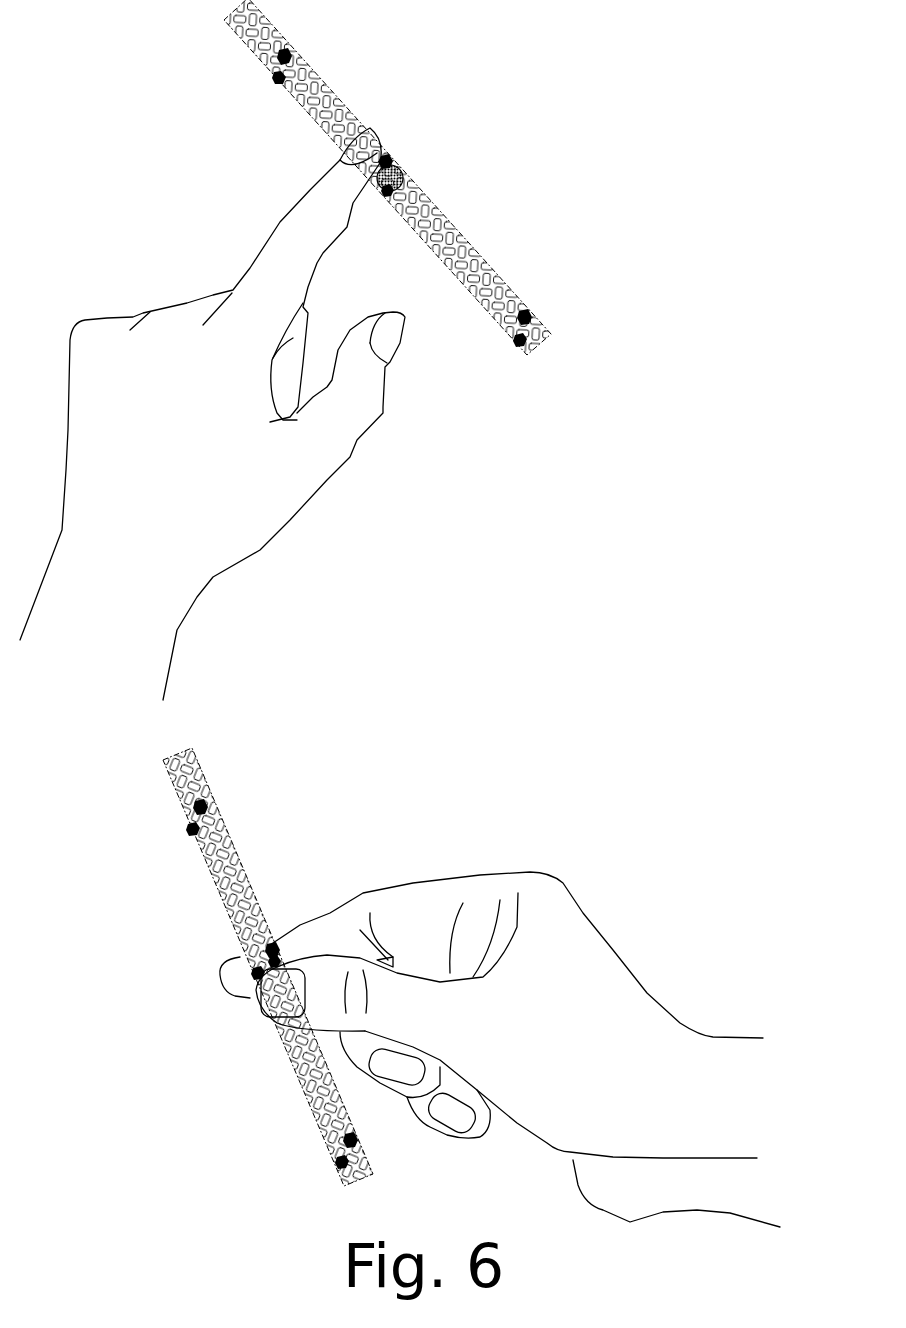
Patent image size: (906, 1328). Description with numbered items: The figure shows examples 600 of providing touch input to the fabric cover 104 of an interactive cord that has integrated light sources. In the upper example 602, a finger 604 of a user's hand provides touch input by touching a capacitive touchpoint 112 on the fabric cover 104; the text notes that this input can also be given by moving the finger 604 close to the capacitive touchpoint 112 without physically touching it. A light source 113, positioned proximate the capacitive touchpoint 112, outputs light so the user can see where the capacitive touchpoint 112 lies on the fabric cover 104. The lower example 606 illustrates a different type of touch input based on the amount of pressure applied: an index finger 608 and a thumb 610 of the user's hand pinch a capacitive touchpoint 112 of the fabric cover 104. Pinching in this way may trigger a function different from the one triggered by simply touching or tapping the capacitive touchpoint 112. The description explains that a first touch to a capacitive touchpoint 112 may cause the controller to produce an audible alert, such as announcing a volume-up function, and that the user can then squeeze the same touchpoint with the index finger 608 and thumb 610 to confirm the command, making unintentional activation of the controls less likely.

The fabric cover 104 is at (243, 39).
The capacitive touchpoint 112 is at (386, 156).
The light source 113 is at (397, 180).
The examples 600 is at (722, 56).
The example of touching a capacitive touchpoint 602 is at (435, 72).
The finger 604 is at (290, 218).
The example of pinching a capacitive touchpoint 606 is at (349, 740).
The index finger 608 is at (220, 972).
The thumb 610 is at (287, 997).